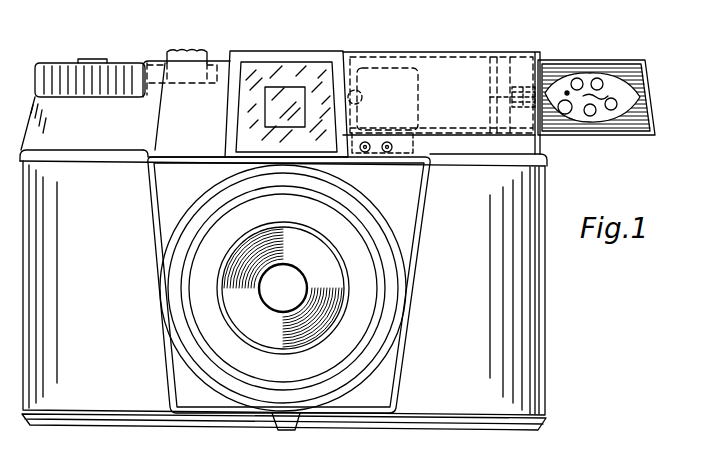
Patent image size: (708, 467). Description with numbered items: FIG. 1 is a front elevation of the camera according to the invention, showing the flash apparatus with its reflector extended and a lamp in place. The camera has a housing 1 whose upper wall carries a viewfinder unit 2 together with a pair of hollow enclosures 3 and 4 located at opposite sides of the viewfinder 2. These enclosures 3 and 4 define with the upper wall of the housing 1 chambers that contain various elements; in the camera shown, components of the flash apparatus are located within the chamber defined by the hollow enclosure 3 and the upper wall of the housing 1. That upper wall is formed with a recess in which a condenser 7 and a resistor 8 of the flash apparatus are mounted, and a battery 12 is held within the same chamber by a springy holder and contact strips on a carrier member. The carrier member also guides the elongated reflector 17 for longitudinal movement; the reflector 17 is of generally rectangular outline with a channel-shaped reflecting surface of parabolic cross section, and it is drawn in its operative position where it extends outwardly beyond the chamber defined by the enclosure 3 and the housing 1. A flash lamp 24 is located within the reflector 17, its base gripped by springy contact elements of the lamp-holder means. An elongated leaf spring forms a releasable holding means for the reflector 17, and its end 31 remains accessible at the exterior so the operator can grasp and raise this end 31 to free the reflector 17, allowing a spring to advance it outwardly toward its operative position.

The housing 1 is at (520, 308).
The viewfinder unit 2 is at (255, 55).
The hollow enclosure 3 is at (455, 53).
The hollow enclosure 4 is at (145, 60).
The condenser 7 is at (363, 157).
The resistor 8 is at (388, 153).
The battery 12 is at (423, 72).
The elongated reflector 17 is at (567, 57).
The flash lamp 24 is at (593, 80).
The end of leaf spring 31 is at (535, 55).